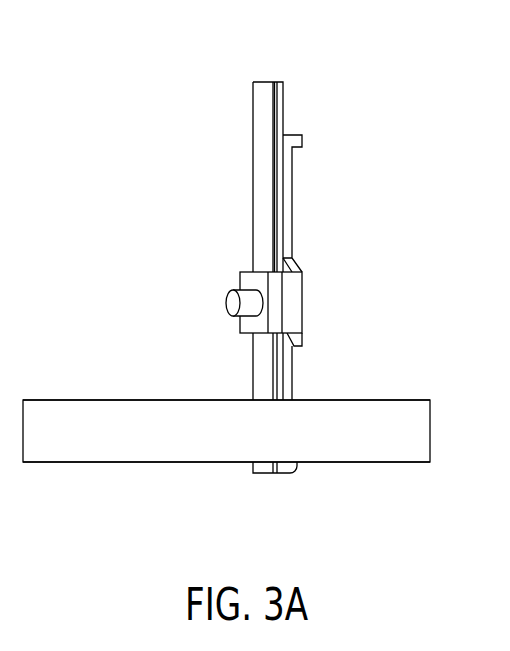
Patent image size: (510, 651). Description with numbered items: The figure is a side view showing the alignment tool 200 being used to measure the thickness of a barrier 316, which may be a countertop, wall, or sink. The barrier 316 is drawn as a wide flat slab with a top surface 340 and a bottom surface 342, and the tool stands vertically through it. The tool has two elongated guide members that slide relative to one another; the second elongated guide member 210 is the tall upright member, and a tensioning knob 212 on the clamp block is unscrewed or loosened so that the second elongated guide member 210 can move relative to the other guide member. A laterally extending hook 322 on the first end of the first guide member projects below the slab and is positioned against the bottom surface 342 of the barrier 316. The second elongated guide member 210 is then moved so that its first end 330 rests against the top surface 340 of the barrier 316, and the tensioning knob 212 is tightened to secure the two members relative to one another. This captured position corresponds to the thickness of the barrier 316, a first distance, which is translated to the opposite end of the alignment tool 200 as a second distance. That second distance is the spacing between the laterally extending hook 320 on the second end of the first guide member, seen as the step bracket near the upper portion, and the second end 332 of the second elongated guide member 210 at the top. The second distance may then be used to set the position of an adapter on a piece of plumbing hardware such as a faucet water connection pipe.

The alignment tool 200 is at (224, 122).
The second elongated guide member 210 is at (263, 203).
The tensioning knob 212 is at (233, 303).
The barrier 316 is at (407, 440).
The laterally extending hook 320 is at (302, 135).
The laterally extending hook 322 is at (262, 473).
The first end 330 is at (243, 390).
The second end 332 is at (276, 82).
The top surface 340 is at (108, 400).
The bottom surface 342 is at (100, 462).